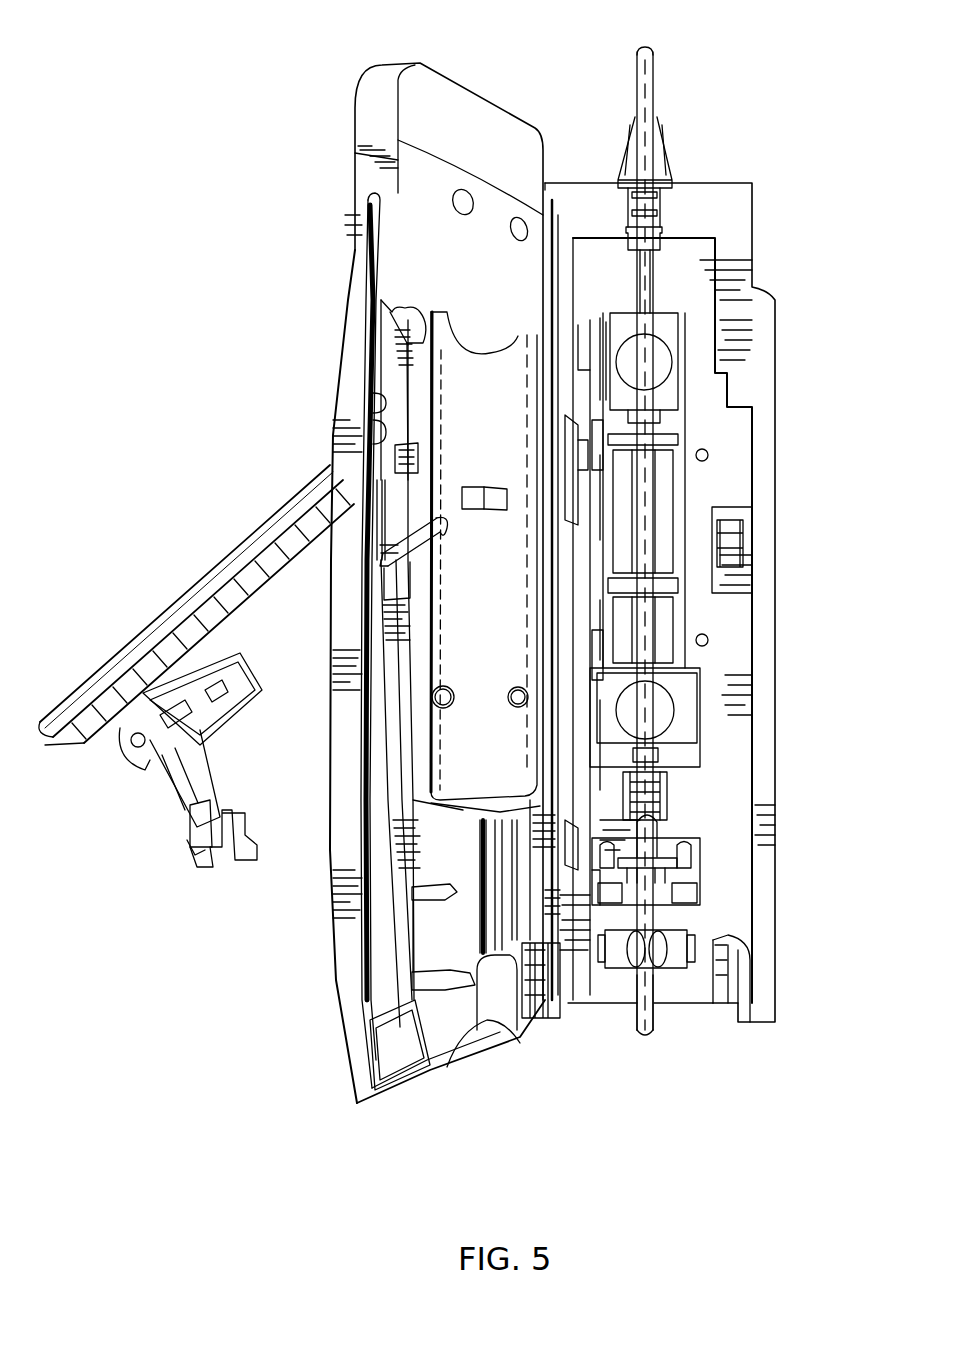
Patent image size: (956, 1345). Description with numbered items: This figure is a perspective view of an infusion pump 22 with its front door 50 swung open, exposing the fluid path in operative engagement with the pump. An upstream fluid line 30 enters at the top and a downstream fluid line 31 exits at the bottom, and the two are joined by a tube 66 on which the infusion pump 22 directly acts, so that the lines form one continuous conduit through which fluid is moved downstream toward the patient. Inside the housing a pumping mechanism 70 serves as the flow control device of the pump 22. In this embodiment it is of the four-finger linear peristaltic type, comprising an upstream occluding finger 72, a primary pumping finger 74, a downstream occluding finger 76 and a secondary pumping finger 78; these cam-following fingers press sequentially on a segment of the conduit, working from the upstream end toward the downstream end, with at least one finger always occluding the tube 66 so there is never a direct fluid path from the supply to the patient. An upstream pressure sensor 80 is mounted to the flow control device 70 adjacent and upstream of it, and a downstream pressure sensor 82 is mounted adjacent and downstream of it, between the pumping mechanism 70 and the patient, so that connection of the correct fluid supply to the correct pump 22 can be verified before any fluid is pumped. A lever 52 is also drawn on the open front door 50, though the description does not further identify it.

The infusion pump 22 is at (713, 182).
The upstream fluid line 30 is at (660, 48).
The downstream fluid line 31 is at (670, 1022).
The front door 50 is at (378, 98).
The lever 52 is at (188, 590).
The tube 66 is at (648, 287).
The pumping mechanism 70 is at (720, 390).
The upstream occluding finger 72 is at (680, 440).
The primary pumping finger 74 is at (668, 512).
The downstream occluding finger 76 is at (680, 585).
The secondary pumping finger 78 is at (672, 630).
The upstream pressure sensor 80 is at (672, 355).
The downstream pressure sensor 82 is at (680, 718).